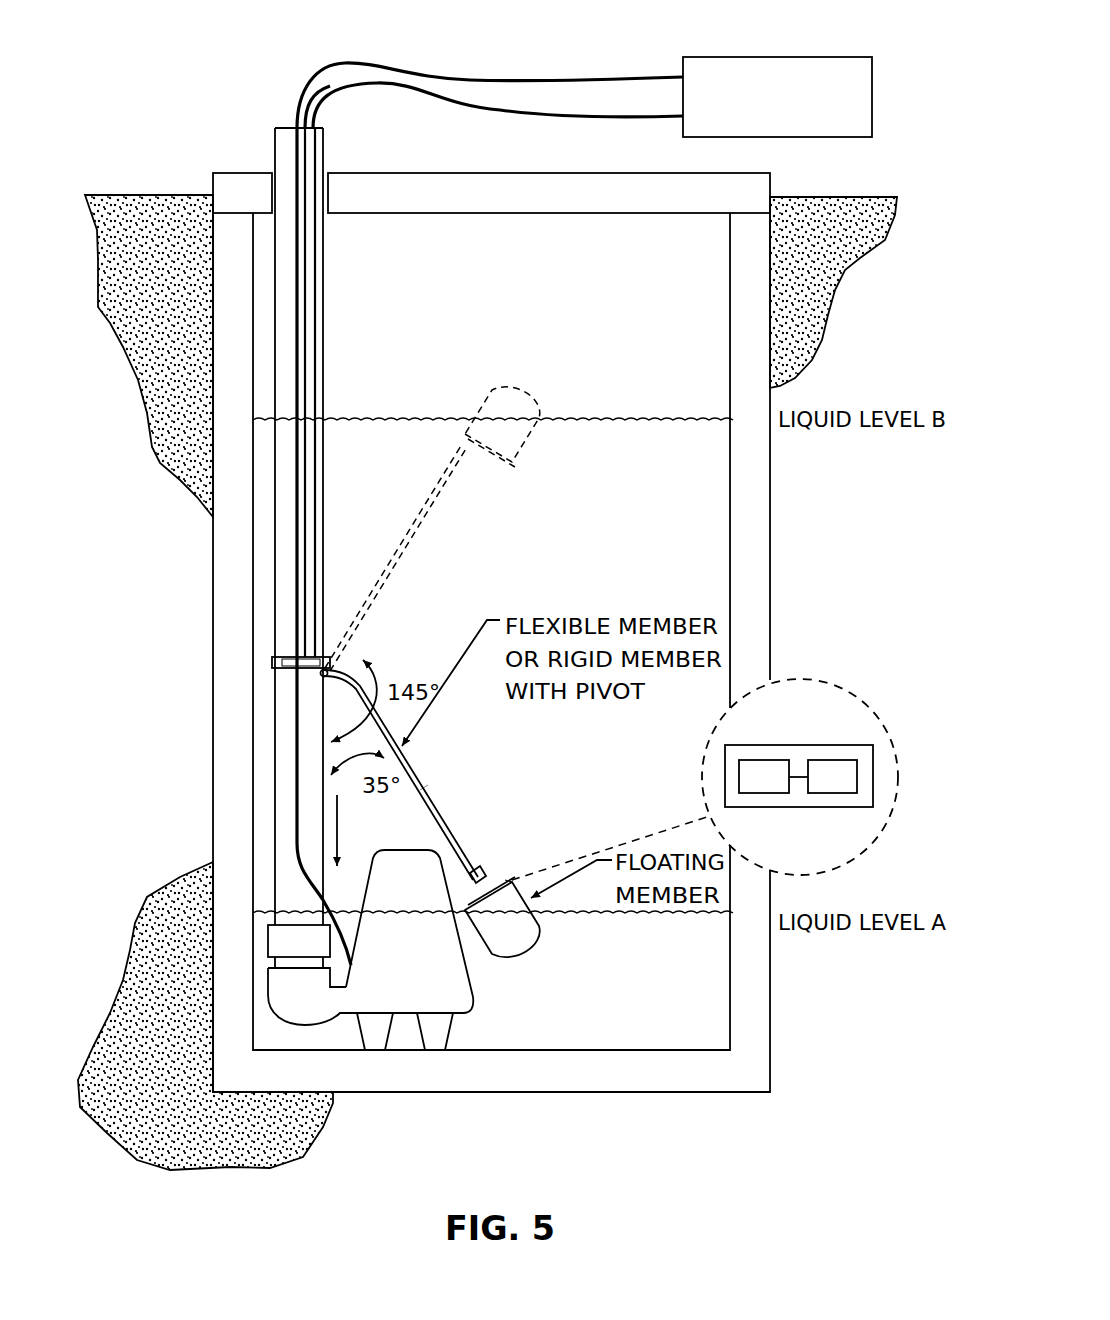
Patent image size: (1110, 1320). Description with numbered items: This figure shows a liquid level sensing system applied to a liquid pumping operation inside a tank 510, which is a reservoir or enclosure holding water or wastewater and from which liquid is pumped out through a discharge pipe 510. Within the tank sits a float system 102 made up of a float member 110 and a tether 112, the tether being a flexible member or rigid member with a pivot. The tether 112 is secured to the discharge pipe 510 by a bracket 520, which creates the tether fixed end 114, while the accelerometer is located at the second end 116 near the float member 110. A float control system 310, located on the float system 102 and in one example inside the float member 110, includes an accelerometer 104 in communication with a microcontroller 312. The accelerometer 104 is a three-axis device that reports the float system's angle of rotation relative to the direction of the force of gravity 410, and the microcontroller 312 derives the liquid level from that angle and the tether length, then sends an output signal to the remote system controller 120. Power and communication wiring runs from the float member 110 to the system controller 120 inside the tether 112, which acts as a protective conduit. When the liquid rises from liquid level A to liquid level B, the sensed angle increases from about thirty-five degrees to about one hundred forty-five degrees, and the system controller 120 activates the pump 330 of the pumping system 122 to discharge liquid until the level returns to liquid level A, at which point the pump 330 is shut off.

The float system 102 is at (536, 781).
The accelerometer 104 is at (834, 796).
The float member 110 is at (533, 953).
The tether 112 is at (424, 790).
The tether fixed end 114 is at (331, 655).
The second end 116 is at (483, 869).
The system controller 120 is at (783, 55).
The pumping system 122 is at (493, 75).
The float control system 310 is at (499, 880).
The microcontroller 312 is at (756, 756).
The pump 330 is at (478, 1005).
The direction of the force of gravity 410 is at (338, 835).
The tank 510 is at (328, 323).
The bracket 520 is at (266, 662).